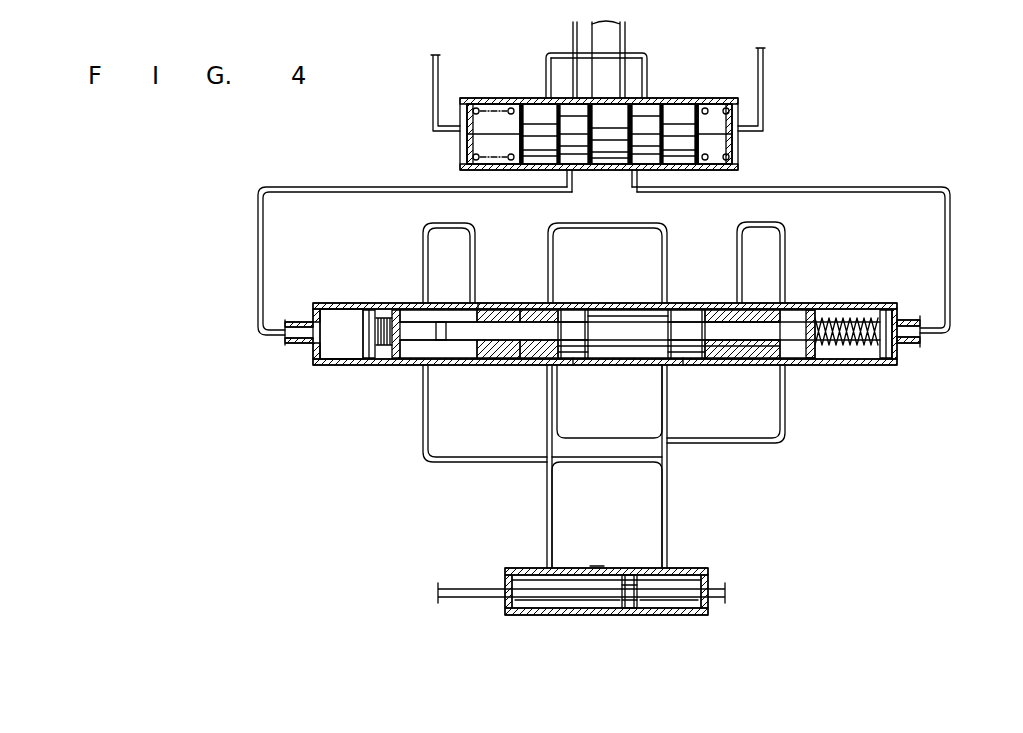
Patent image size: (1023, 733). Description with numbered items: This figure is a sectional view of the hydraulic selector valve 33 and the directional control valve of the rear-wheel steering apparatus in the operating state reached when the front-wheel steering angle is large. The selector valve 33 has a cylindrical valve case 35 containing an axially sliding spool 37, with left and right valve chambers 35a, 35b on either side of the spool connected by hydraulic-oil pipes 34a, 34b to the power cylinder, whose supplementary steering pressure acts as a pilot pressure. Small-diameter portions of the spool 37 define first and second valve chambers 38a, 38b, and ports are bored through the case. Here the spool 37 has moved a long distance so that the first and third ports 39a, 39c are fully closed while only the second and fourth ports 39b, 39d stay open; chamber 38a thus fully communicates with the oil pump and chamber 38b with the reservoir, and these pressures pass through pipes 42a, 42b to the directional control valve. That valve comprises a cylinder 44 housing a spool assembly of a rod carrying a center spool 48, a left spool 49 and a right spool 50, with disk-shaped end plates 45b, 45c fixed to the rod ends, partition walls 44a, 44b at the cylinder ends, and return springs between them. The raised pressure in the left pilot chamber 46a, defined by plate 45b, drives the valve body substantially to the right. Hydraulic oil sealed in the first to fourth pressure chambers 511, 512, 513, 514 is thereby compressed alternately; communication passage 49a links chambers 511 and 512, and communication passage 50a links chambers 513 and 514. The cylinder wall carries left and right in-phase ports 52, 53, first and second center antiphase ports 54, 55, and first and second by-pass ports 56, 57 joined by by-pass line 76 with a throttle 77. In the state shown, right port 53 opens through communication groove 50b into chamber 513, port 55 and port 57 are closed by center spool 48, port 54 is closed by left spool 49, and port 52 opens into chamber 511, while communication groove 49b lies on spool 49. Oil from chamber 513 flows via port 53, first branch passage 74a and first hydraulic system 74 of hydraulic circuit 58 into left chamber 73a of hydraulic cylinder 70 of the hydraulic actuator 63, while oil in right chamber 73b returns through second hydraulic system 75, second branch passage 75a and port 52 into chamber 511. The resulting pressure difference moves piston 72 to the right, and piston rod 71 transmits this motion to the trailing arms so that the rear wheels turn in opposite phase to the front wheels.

The hydraulic selector valve 33 is at (601, 120).
The hydraulic-oil pipe 34a is at (434, 106).
The hydraulic-oil pipe 34b is at (765, 101).
The valve case 35 is at (720, 100).
The left valve chamber 35a is at (472, 141).
The right valve chamber 35b is at (738, 147).
The spool 37 is at (610, 150).
The first valve chamber 38a is at (574, 176).
The second valve chamber 38b is at (641, 172).
The first port 39a is at (548, 99).
The second port 39b is at (573, 97).
The third port 39c is at (625, 97).
The fourth port 39d is at (647, 99).
The hydraulic-oil pipe 42a is at (262, 230).
The hydraulic-oil pipe 42b is at (950, 232).
The cylinder 44 is at (606, 339).
The partition wall 44a is at (382, 358).
The partition wall 44b is at (822, 360).
The left end plate 45b is at (366, 316).
The right end plate 45c is at (884, 358).
The left pilot chamber 46a is at (338, 348).
The center spool 48 is at (634, 348).
The left spool 49 is at (532, 364).
The communication passage 49a is at (492, 362).
The communication groove 49b is at (528, 309).
The right spool 50 is at (770, 372).
The communication passage 50a is at (745, 366).
The communication groove 50b is at (706, 308).
The first pressure chamber 511 is at (445, 368).
The second pressure chamber 512 is at (600, 366).
The third pressure chamber 513 is at (706, 376).
The fourth pressure chamber 514 is at (798, 306).
The left port 52 is at (480, 303).
The right port 53 is at (745, 310).
The first center port 54 is at (573, 365).
The second center port 55 is at (684, 365).
The first by-pass port 56 is at (560, 308).
The second by-pass port 57 is at (650, 305).
The hydraulic circuit 58 is at (624, 466).
The hydraulic actuator 63 is at (596, 566).
The hydraulic cylinder 70 is at (597, 587).
The piston rod 71 is at (712, 590).
The piston 72 is at (632, 606).
The left chamber 73a is at (558, 610).
The right chamber 73b is at (695, 612).
The first hydraulic system 74 is at (547, 496).
The first branch passage 74a is at (765, 443).
The second hydraulic system 75 is at (667, 512).
The second branch passage 75a is at (428, 462).
The by-pass line 76 is at (548, 250).
The throttle 77 is at (595, 238).